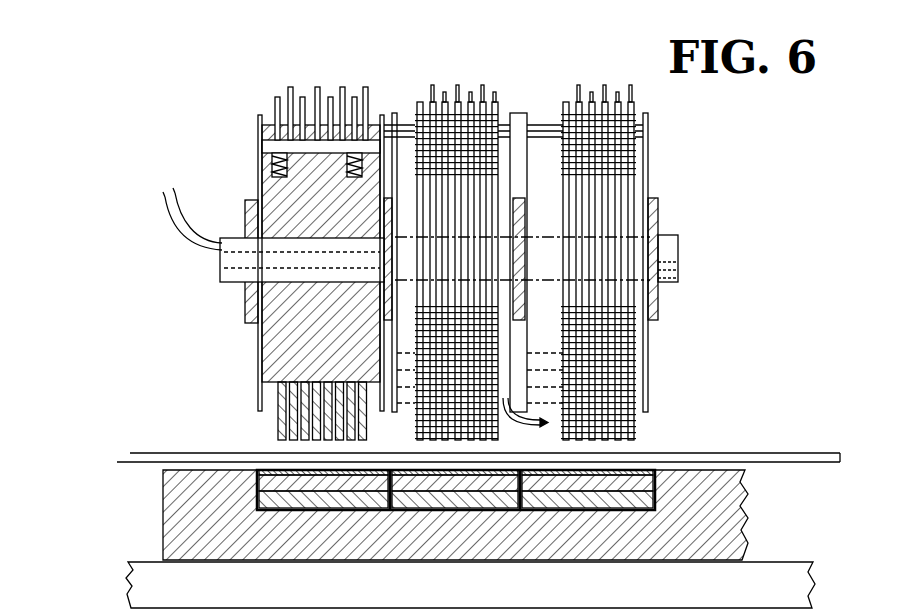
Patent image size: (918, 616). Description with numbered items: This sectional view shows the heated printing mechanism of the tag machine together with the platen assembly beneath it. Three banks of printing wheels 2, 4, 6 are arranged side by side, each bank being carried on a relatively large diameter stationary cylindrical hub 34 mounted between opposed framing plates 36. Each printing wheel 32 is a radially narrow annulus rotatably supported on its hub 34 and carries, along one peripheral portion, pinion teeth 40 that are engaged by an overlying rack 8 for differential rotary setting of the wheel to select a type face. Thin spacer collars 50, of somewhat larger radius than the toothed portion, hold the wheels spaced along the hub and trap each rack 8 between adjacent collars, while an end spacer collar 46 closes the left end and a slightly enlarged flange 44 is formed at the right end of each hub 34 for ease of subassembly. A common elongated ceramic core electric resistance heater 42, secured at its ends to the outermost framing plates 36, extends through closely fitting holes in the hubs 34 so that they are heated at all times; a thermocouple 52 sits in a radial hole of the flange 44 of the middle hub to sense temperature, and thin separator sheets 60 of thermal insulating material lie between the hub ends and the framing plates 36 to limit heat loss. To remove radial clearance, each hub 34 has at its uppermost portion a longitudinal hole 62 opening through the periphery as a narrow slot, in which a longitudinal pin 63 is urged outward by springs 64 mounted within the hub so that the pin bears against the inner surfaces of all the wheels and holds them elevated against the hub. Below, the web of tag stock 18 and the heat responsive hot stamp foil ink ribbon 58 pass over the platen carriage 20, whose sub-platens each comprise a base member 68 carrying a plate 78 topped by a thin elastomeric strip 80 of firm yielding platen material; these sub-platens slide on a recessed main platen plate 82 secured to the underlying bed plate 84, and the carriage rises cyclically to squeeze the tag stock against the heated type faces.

The bank of printing wheels 2 is at (335, 85).
The bank of printing wheels 4 is at (476, 95).
The bank of printing wheels 6 is at (618, 88).
The rack 8 is at (315, 107).
The web of tag stock 18 is at (795, 462).
The platen carriage 20 is at (124, 581).
The printing wheel 32 is at (278, 428).
The hub 34 is at (258, 346).
The framing plate 36 is at (245, 200).
The pinion teeth 40 is at (628, 146).
The heater 42 is at (234, 250).
The flange 44 is at (382, 424).
The end spacer collar 46 is at (258, 392).
The thin spacer collar 50 is at (275, 108).
The thermocouple 52 is at (518, 430).
The hot stamp foil ink ribbon 58 is at (708, 455).
The separator sheet 60 is at (258, 165).
The longitudinal hole 62 is at (263, 147).
The longitudinal pin 63 is at (317, 149).
The spring 64 is at (288, 150).
The base member 68 is at (345, 500).
The plate 78 is at (305, 485).
The elastomeric strip 80 is at (268, 466).
The main platen plate 82 is at (190, 498).
The bed plate 84 is at (456, 596).